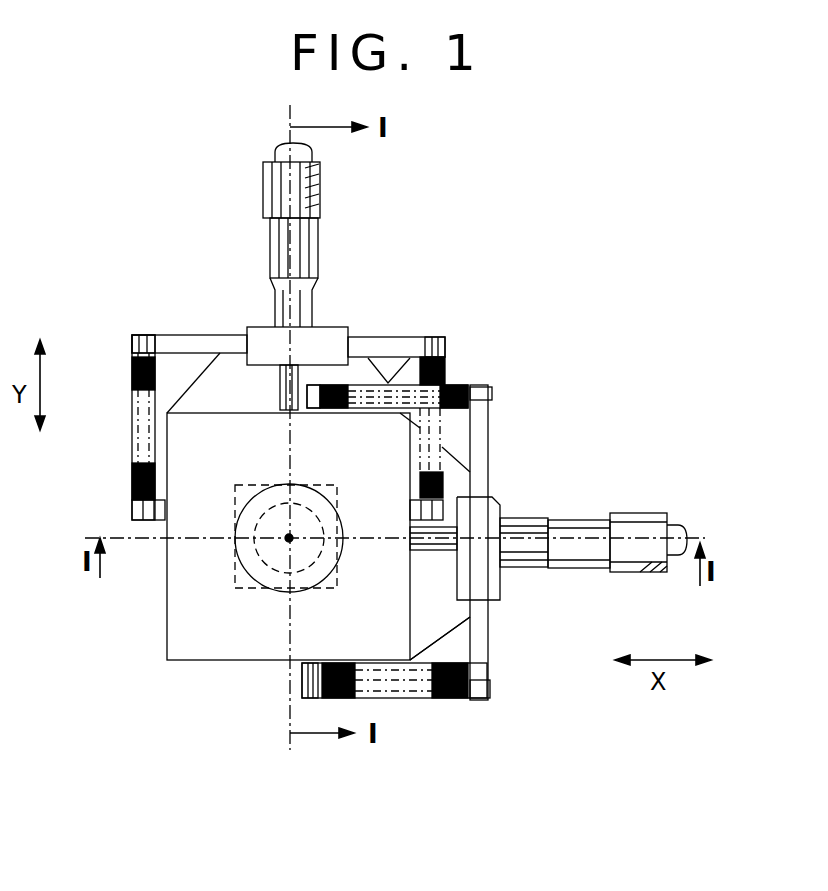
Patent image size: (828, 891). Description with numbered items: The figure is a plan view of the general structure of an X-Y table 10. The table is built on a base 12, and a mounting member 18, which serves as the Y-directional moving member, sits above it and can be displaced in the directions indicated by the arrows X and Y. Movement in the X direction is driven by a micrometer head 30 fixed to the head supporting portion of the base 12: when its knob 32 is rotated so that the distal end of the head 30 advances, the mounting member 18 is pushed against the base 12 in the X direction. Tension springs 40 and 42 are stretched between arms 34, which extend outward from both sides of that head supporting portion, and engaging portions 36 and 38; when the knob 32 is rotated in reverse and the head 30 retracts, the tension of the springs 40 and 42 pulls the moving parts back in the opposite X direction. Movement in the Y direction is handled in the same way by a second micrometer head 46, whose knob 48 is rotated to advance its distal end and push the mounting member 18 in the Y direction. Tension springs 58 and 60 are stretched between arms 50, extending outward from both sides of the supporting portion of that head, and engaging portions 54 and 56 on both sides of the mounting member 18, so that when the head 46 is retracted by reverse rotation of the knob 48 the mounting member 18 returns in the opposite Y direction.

The X-Y table 10 is at (510, 285).
The base 12 is at (475, 638).
The mounting member 18 is at (167, 617).
The micrometer head 30 is at (540, 577).
The knob 32 is at (617, 513).
The arms 34 is at (488, 440).
The engaging portion 36 is at (318, 345).
The engaging portion 38 is at (302, 693).
The tension spring 40 is at (385, 390).
The tension spring 42 is at (390, 700).
The micrometer head 46 is at (335, 250).
The knob 48 is at (320, 178).
The arms 50 is at (190, 335).
The engaging portion 54 is at (133, 512).
The engaging portion 56 is at (497, 512).
The tension spring 58 is at (135, 425).
The tension spring 60 is at (445, 358).